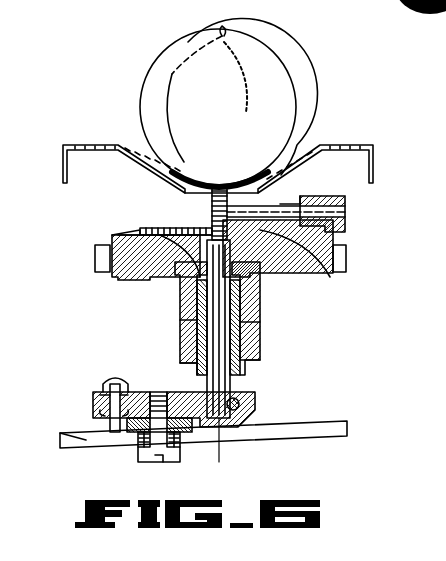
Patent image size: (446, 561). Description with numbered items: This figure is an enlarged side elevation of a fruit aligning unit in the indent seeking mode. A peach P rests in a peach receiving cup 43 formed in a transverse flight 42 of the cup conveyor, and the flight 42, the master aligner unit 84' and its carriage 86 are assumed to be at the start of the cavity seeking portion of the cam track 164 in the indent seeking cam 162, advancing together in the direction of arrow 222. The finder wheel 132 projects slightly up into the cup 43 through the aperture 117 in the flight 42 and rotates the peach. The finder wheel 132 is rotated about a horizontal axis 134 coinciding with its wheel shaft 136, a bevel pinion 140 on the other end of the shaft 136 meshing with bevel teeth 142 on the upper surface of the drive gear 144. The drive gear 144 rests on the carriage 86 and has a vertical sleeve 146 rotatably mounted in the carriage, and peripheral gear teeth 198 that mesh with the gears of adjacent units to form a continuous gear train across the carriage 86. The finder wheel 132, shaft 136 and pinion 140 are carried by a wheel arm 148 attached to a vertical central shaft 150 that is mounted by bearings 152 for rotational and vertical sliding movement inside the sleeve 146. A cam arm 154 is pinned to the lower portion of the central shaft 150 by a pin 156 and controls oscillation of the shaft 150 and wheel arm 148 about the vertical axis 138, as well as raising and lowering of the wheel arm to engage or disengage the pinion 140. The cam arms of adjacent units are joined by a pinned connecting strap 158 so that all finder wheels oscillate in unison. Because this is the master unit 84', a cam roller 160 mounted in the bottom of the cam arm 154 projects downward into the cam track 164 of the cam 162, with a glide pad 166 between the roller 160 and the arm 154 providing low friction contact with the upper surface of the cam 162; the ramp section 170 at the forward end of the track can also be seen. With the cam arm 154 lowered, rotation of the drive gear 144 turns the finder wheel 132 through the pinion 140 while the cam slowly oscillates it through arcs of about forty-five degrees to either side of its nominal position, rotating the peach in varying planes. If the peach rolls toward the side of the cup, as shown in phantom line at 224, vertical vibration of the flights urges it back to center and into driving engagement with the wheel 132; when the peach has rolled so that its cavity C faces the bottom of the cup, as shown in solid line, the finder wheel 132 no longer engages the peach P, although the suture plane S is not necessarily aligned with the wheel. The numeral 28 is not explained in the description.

The cavity C is at (218, 106).
The peach P is at (222, 32).
The suture plane S is at (233, 46).
The arrow 222 is at (96, 107).
The phantom line peach position 224 is at (306, 58).
The transverse flight 42 is at (75, 143).
The peach receiving cup 43 is at (312, 147).
The aperture 117 is at (183, 193).
The finder wheel 132 is at (207, 212).
The horizontal axis 134 is at (357, 205).
The wheel shaft 136 is at (338, 218).
The bevel pinion 140 is at (330, 193).
The master aligner unit 84' is at (122, 217).
The bevel teeth 142 is at (130, 236).
The drive gear 144 is at (118, 274).
The wheel arm 148 is at (301, 258).
The peripheral gear teeth 198 is at (95, 258).
The vertical sleeve 146 is at (243, 296).
The bearings 152 is at (205, 303).
The central shaft 150 is at (205, 320).
The carriage 86 is at (258, 322).
The vertical axis 138 is at (222, 341).
The cam arm 154 is at (187, 392).
The pin 156 is at (240, 404).
The connecting strap 158 is at (105, 384).
The glide pad 166 is at (127, 425).
The indent seeking cam 162 is at (60, 439).
The cam track 164 is at (86, 443).
The cam roller 160 is at (140, 450).
The conveyor 28 is at (320, 398).
The ramp section 170 is at (328, 422).